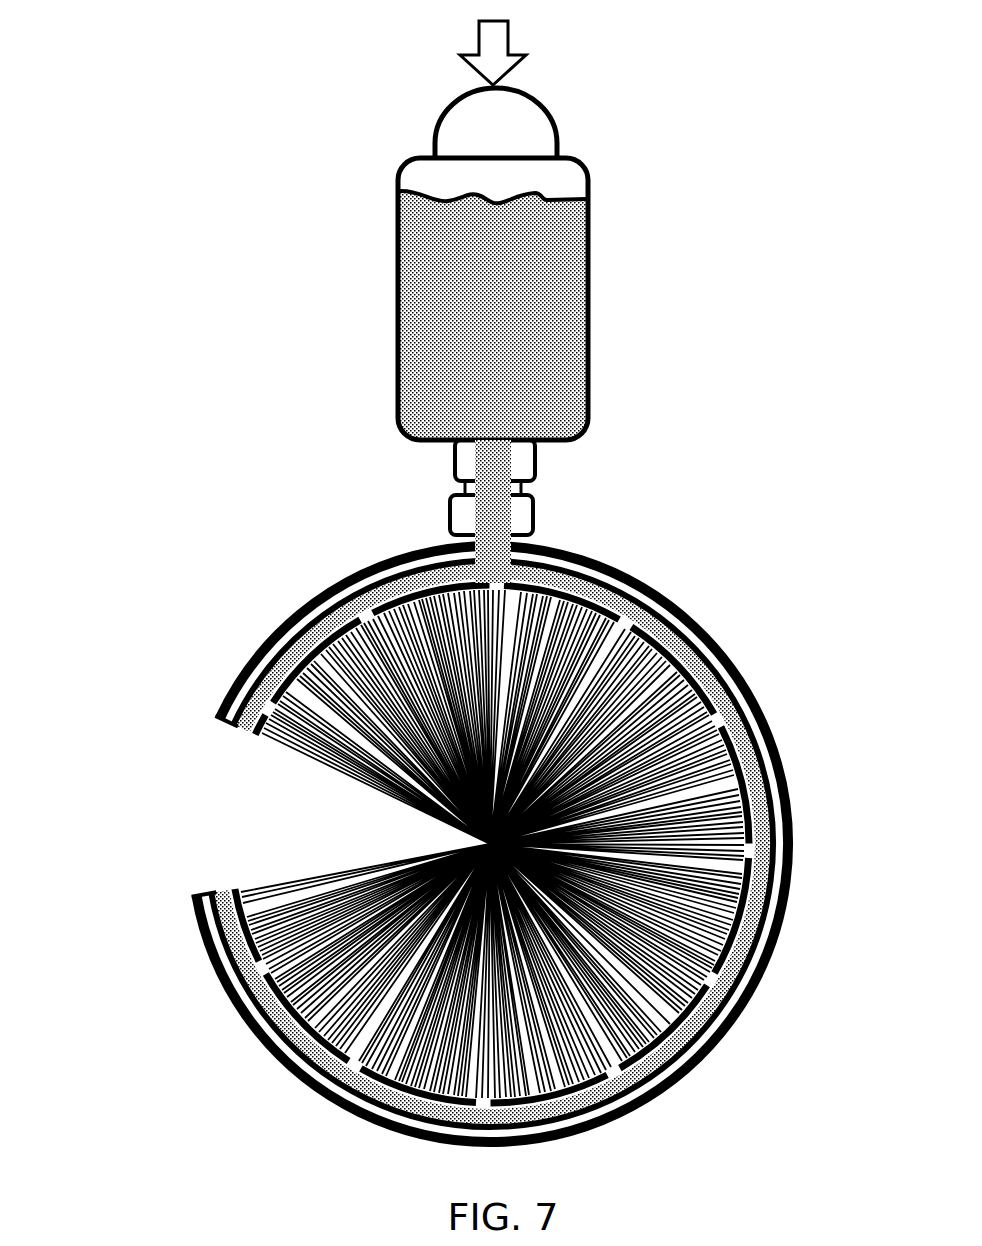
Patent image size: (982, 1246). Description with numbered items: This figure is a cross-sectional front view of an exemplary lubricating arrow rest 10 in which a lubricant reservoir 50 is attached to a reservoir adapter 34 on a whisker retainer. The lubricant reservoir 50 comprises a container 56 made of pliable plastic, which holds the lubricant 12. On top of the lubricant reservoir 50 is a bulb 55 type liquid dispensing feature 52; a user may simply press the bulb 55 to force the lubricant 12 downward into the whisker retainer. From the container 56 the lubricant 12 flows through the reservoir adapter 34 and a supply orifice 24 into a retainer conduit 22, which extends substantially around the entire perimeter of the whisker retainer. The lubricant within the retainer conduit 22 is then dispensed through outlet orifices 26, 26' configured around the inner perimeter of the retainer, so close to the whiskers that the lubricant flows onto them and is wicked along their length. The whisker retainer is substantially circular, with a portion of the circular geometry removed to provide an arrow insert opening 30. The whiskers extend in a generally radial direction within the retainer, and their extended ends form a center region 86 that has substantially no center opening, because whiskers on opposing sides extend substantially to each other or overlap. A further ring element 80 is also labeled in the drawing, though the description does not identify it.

The lubricating arrow rest 10 is at (250, 414).
The lubricant 12 is at (512, 258).
The retainer conduit 22 is at (640, 570).
The supply orifice 24 is at (477, 518).
The outlet orifice 26 is at (492, 802).
The outlet orifice 26' is at (198, 677).
The arrow insert opening 30 is at (225, 800).
The reservoir adapter 34 is at (515, 505).
The lubricant reservoir 50 is at (413, 210).
The liquid dispensing feature 52 is at (518, 117).
The bulb 55 is at (453, 113).
The container 56 is at (528, 343).
The inner housing ring 80 is at (772, 737).
The center region 86 is at (703, 630).